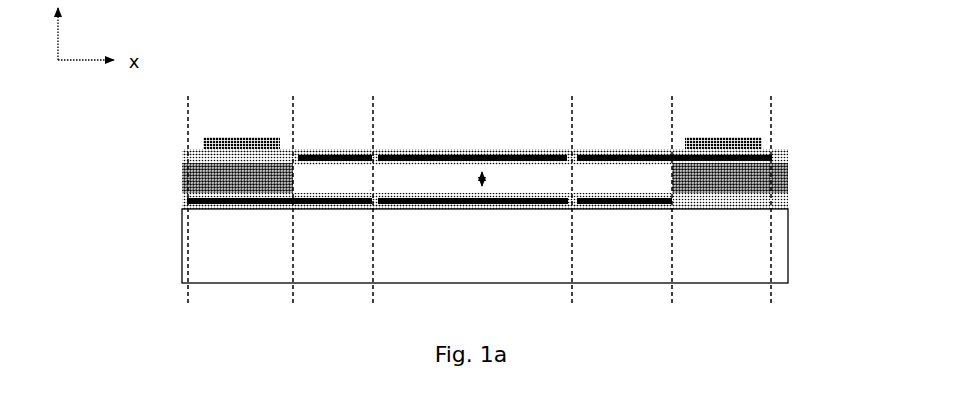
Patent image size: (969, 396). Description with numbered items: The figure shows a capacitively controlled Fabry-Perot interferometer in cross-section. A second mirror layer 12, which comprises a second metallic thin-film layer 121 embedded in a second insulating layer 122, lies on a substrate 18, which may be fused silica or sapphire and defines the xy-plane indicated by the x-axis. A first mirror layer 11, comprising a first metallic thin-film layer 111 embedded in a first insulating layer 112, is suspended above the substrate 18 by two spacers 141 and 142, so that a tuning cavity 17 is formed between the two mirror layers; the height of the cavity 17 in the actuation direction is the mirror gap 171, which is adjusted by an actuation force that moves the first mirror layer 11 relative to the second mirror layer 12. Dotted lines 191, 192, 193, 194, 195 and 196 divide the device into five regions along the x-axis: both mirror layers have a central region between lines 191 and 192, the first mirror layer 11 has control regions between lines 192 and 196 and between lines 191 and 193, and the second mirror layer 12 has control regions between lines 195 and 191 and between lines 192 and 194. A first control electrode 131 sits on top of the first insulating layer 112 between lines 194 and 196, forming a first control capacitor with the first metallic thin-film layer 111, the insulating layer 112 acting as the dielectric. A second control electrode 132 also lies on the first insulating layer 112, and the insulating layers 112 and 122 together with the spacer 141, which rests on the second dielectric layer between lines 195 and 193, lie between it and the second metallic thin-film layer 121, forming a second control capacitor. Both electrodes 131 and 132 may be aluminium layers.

The first mirror layer 11 is at (158, 155).
The second mirror layer 12 is at (158, 201).
The first metallic thin-film layer 111 is at (341, 148).
The first insulating layer 112 is at (515, 140).
The second metallic thin-film layer 121 is at (332, 214).
The second insulating layer 122 is at (508, 218).
The first control electrode 131 is at (728, 132).
The second control electrode 132 is at (246, 132).
The spacer 141 is at (174, 177).
The spacer 142 is at (798, 184).
The tuning cavity 17 is at (482, 179).
The mirror gap 171 is at (500, 181).
The substrate 18 is at (800, 245).
The dotted line 191 is at (373, 188).
The dotted line 192 is at (572, 188).
The dotted line 193 is at (295, 188).
The dotted line 194 is at (672, 188).
The dotted line 195 is at (190, 188).
The dotted line 196 is at (771, 188).